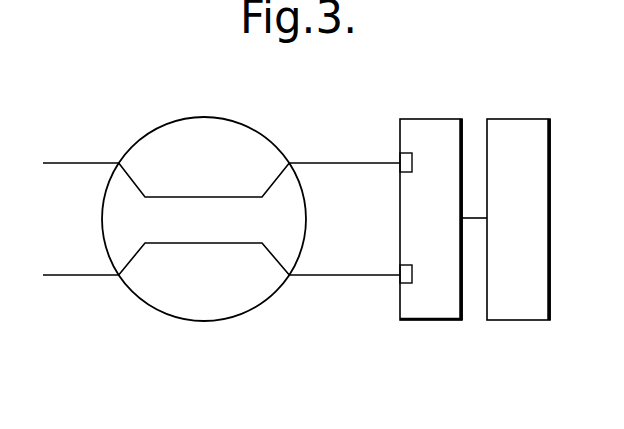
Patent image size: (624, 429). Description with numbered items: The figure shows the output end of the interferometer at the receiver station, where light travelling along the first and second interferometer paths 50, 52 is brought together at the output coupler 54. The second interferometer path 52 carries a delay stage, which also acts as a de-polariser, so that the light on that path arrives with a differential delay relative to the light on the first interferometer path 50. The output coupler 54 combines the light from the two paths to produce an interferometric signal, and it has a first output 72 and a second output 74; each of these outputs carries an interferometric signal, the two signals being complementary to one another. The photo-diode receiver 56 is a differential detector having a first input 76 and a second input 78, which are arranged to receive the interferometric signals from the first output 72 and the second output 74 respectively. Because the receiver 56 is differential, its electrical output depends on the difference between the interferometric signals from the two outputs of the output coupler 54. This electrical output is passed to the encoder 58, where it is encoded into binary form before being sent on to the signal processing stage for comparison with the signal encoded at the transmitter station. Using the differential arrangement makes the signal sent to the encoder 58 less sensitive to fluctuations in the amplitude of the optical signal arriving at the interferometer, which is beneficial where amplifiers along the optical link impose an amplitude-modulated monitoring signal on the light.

The first interferometer path 50 is at (72, 278).
The second interferometer path 52 is at (69, 163).
The output coupler 54 is at (148, 307).
The photo-diode receiver 56 is at (432, 128).
The encoder 58 is at (518, 130).
The first output 72 is at (320, 160).
The second output 74 is at (307, 278).
The first input 76 is at (402, 158).
The second input 78 is at (406, 284).